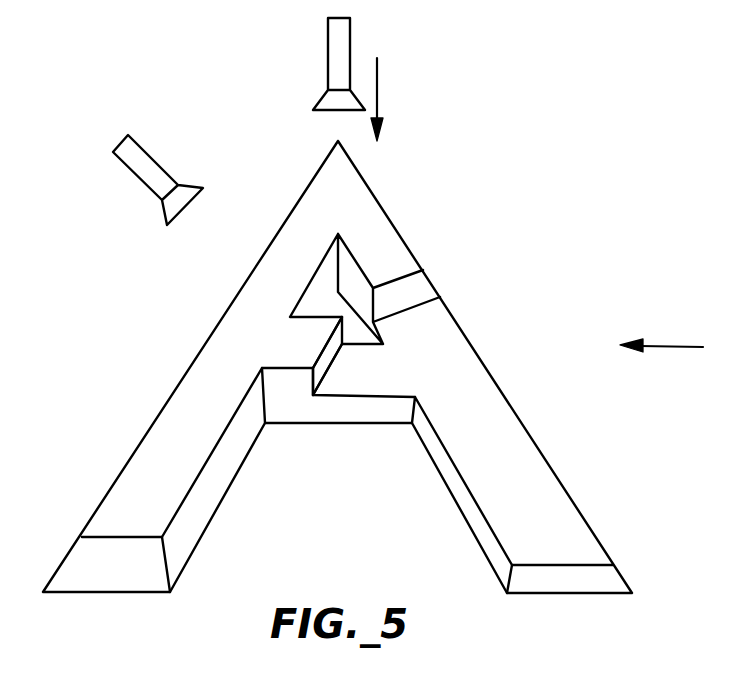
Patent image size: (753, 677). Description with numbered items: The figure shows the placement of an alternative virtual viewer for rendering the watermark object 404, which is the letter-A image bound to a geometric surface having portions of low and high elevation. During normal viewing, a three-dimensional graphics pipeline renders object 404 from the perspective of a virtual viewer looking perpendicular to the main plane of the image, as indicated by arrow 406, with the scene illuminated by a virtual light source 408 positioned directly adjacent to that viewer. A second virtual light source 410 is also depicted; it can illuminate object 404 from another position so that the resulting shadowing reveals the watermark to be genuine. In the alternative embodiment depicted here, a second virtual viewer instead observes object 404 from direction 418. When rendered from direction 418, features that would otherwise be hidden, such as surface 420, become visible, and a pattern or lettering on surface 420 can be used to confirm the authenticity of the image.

The object 404 is at (580, 507).
The arrow 406 is at (377, 98).
The virtual light source 408 is at (328, 55).
The second virtual light source 410 is at (143, 187).
The direction 418 is at (663, 345).
The surface 420 is at (320, 372).